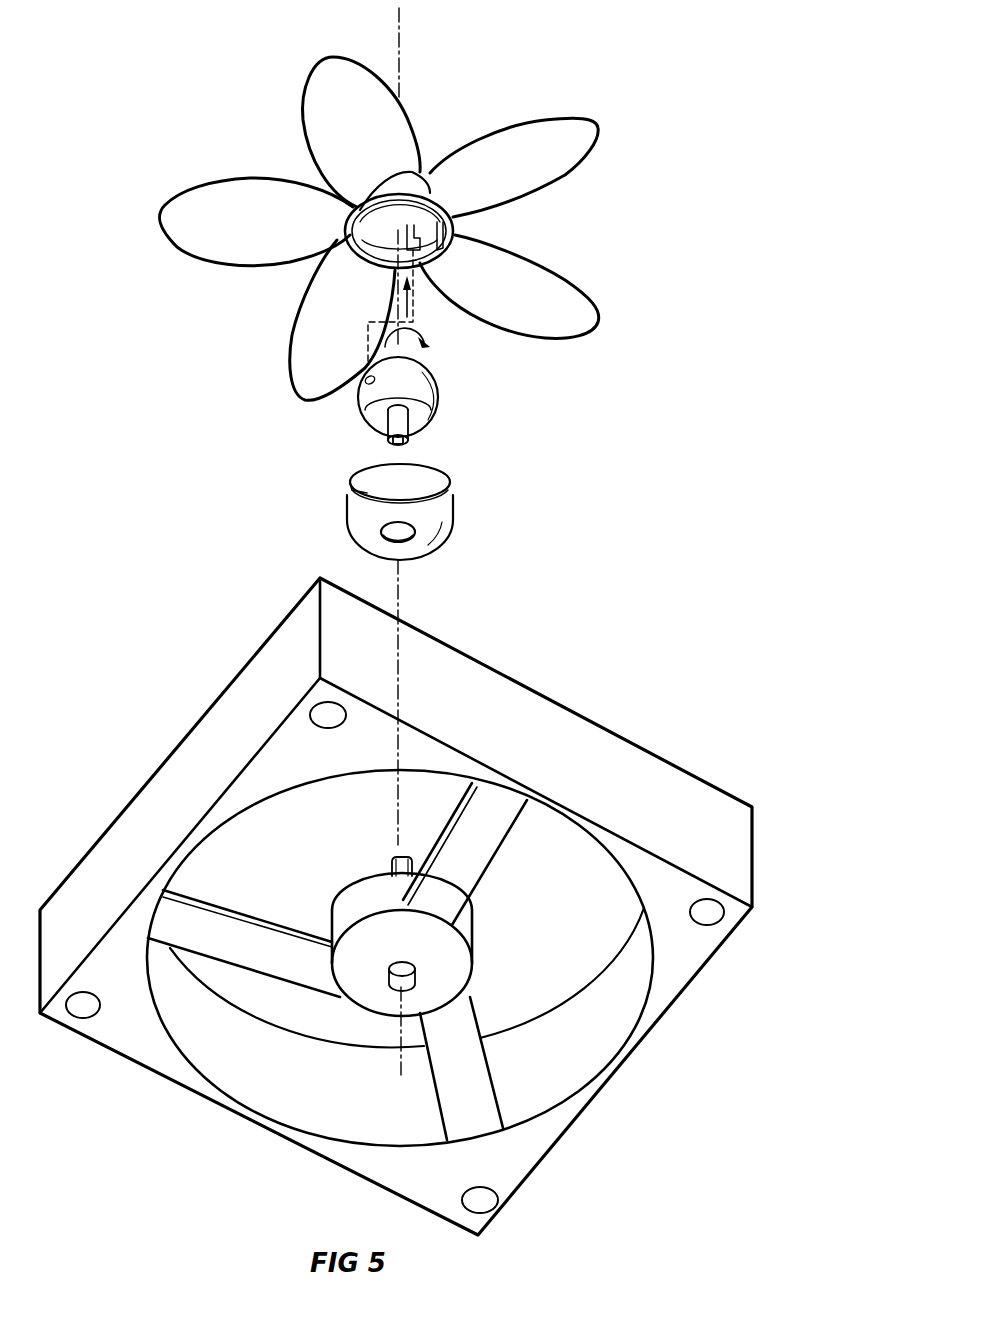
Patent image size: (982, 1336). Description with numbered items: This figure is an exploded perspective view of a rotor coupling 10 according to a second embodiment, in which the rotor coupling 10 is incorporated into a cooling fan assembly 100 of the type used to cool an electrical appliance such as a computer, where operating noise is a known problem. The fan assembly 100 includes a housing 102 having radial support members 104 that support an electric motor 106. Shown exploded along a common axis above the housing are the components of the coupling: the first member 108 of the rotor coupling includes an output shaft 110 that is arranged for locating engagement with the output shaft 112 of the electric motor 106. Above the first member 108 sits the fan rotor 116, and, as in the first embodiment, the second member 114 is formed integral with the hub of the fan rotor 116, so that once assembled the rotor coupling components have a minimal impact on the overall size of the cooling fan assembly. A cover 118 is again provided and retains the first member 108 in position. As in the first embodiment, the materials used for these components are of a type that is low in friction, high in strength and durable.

The rotor coupling 10 is at (590, 418).
The cooling fan assembly 100 is at (672, 1131).
The housing 102 is at (753, 842).
The radial support members 104 is at (240, 927).
The electric motor 106 is at (450, 953).
The first member 108 is at (410, 380).
The output shaft 110 is at (405, 425).
The output shaft 112 is at (390, 862).
The second member 114 is at (420, 173).
The fan rotor 116 is at (399, 220).
The cover 118 is at (440, 530).